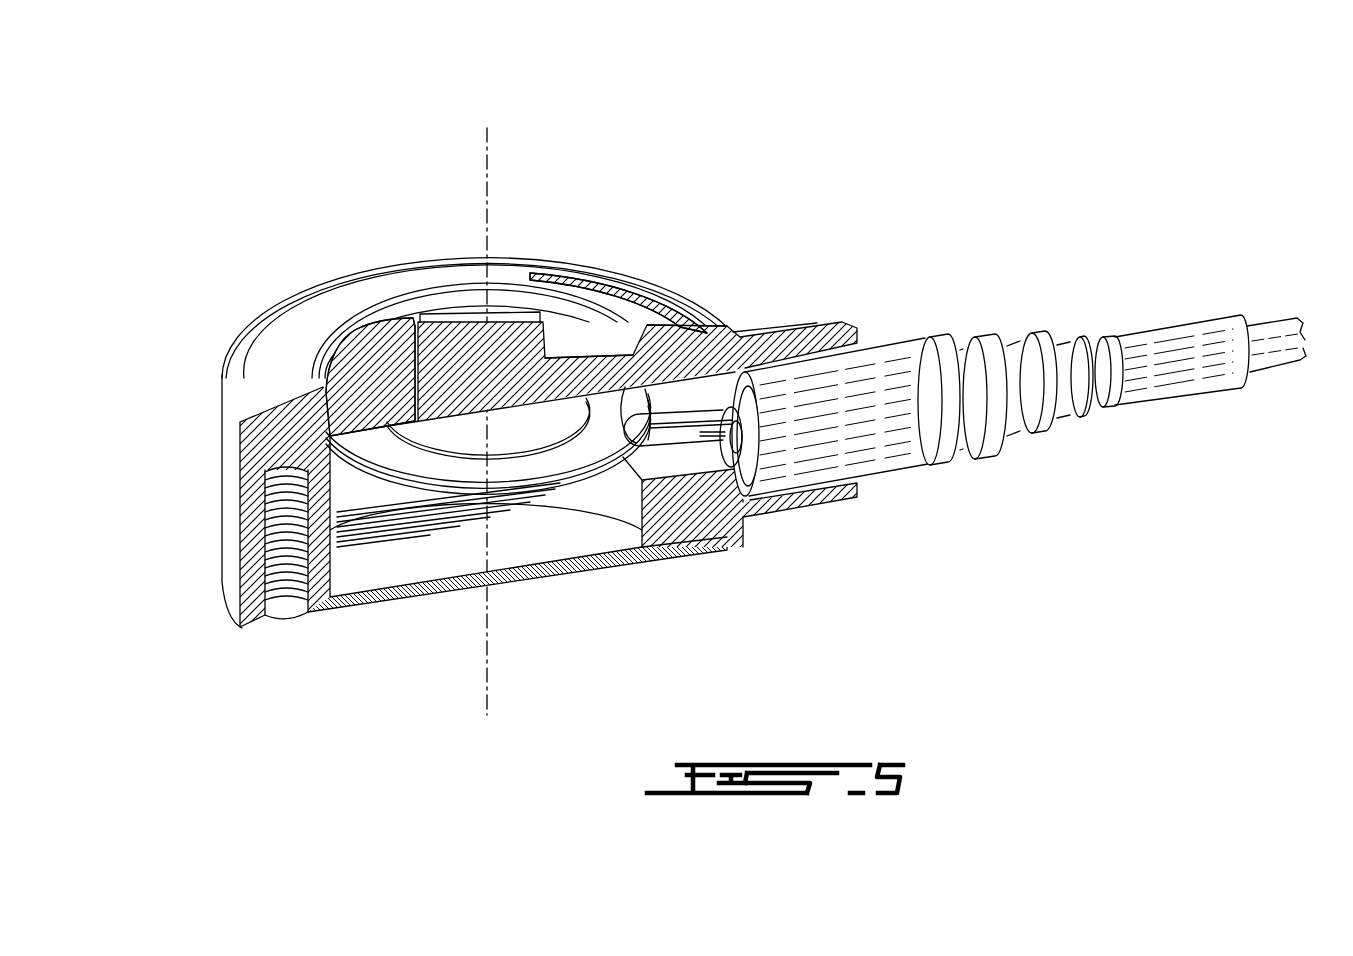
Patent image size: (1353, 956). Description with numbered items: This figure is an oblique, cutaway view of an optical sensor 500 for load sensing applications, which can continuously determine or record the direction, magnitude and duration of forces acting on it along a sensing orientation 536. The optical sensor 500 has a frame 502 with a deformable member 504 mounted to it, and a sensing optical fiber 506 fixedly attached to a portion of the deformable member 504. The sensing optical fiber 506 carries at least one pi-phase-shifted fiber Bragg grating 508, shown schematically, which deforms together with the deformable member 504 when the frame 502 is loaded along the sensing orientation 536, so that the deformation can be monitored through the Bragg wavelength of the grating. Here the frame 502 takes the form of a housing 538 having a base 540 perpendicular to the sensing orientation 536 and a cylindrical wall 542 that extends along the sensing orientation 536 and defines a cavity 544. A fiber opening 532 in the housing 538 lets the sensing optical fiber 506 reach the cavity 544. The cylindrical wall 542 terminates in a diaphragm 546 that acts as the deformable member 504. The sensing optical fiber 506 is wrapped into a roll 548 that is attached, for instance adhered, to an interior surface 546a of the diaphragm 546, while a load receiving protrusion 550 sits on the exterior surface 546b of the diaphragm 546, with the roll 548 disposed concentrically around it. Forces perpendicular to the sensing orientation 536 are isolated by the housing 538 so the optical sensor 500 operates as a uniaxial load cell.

The optical sensor 500 is at (918, 168).
The frame 502 is at (752, 320).
The deformable member 504 is at (617, 340).
The sensing optical fiber 506 is at (417, 440).
The pi-phase-shifted fiber Bragg grating 508 is at (580, 340).
The fiber opening 532 is at (712, 455).
The sensing orientation 536 is at (490, 143).
The housing 538 is at (702, 318).
The base 540 is at (680, 553).
The cylindrical wall 542 is at (318, 568).
The cavity 544 is at (403, 572).
The diaphragm 546 is at (340, 348).
The interior surface 546a is at (337, 460).
The exterior surface 546b is at (700, 340).
The roll 548 is at (528, 492).
The load receiving protrusion 550 is at (460, 318).